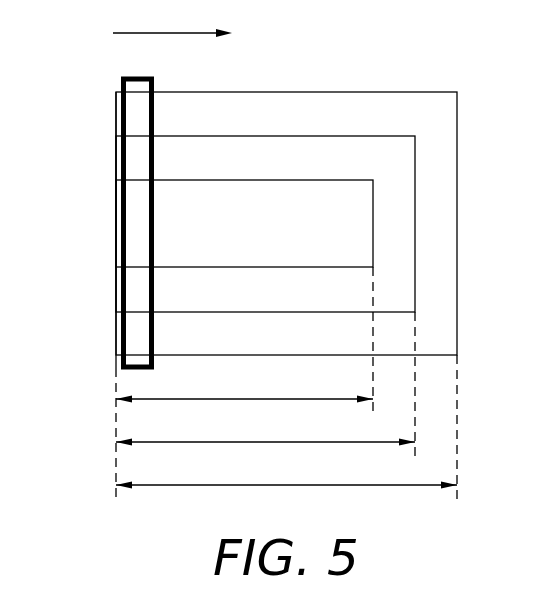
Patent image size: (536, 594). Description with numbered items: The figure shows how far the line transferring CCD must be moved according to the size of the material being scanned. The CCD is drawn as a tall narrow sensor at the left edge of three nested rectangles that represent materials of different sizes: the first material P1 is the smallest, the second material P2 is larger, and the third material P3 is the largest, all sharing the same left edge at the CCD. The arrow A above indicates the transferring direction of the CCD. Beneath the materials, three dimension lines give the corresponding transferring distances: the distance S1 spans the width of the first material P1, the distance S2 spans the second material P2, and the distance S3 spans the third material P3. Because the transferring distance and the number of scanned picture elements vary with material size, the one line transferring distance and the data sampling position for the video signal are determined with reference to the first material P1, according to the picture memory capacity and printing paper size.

The transferring direction A is at (181, 33).
The line transferring CCD is at (116, 112).
The first material P1 is at (334, 180).
The second material P2 is at (368, 136).
The third material P3 is at (407, 92).
The transferring distance for first material S1 is at (244, 387).
The transferring distance for second material S2 is at (265, 430).
The transferring distance for third material S3 is at (286, 473).